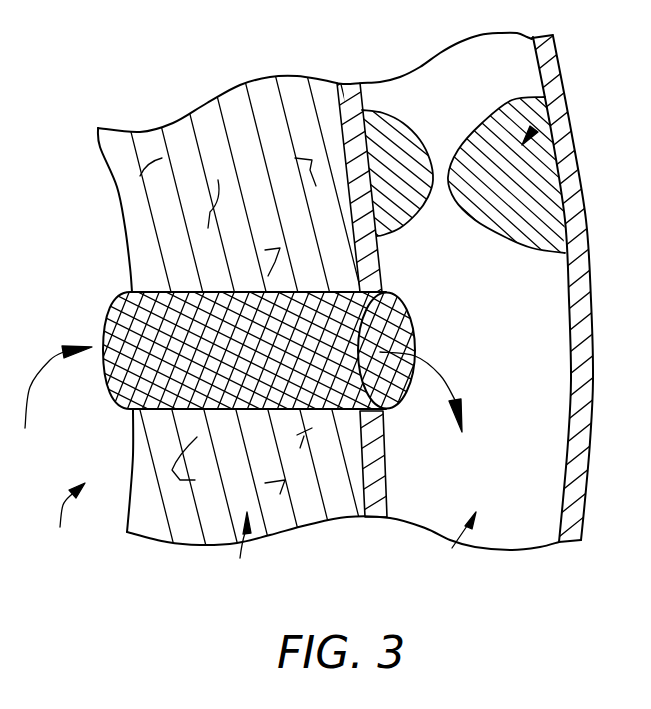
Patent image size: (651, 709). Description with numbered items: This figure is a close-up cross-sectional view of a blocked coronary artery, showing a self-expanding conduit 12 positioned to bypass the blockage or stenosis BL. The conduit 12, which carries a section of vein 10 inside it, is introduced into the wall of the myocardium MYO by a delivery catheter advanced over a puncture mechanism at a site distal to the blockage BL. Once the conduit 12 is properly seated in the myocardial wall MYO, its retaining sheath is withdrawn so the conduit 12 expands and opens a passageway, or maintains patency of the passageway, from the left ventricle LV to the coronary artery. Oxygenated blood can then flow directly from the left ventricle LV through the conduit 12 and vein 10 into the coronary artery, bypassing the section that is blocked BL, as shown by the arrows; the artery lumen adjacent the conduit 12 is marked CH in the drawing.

The vein graft 10 is at (162, 257).
The conduit 12 is at (158, 292).
The blockage BL is at (568, 117).
The left ventricle LV is at (58, 450).
The myocardium MYO is at (210, 549).
The chamber CH is at (429, 547).